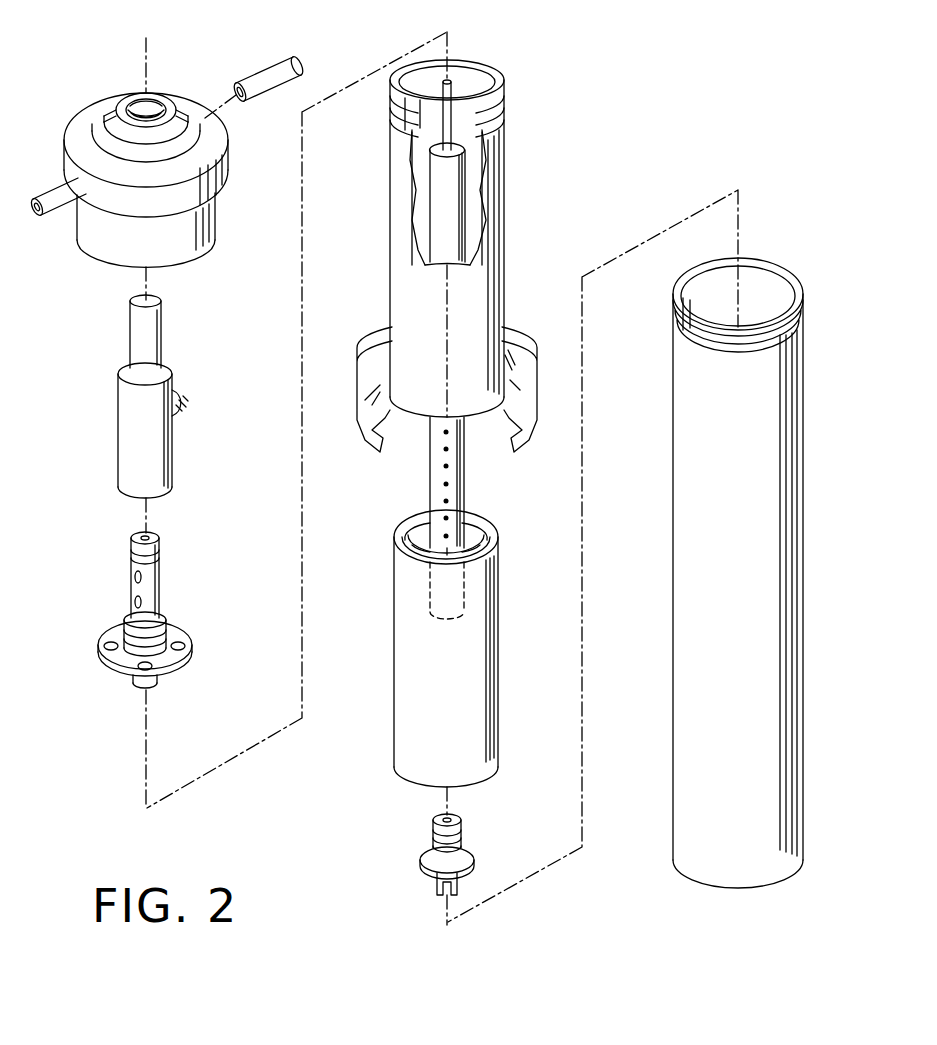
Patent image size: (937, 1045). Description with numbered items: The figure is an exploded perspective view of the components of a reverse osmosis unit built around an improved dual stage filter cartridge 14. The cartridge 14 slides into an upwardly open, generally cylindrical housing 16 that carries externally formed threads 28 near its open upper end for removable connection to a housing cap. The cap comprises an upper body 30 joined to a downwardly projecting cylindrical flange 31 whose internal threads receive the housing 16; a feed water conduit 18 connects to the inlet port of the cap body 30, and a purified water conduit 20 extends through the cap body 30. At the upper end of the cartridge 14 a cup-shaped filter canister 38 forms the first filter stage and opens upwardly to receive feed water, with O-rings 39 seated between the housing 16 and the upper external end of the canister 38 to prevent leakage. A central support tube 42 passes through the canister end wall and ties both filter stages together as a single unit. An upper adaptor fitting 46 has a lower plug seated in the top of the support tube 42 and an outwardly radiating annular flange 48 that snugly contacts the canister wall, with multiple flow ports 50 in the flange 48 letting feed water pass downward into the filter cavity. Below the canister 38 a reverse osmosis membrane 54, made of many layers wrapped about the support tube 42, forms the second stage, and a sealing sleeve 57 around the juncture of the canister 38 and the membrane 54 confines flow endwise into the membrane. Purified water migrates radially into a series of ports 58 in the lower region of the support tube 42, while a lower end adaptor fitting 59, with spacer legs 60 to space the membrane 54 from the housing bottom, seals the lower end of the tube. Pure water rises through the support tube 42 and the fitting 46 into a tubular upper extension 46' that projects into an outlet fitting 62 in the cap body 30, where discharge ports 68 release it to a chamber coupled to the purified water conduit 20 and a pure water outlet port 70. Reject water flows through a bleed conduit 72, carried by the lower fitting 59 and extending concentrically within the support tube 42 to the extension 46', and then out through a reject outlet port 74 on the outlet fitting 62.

The filter cartridge 14 is at (542, 200).
The housing 16 is at (778, 454).
The feed water conduit 18 is at (43, 200).
The purified water conduit 20 is at (257, 78).
The externally formed threads 28 is at (803, 320).
The upper body 30 is at (216, 172).
The cylindrical flange 31 is at (100, 240).
The filter canister 38 is at (407, 280).
The O-rings 39 is at (506, 132).
The central support tube 42 is at (452, 247).
The upper adaptor fitting 46 is at (182, 636).
The tubular upper extension 46' is at (175, 575).
The annular flange 48 is at (178, 672).
The flow ports 50 is at (103, 645).
The reverse osmosis membrane 54 is at (482, 626).
The sealing sleeve 57 is at (518, 337).
The ports 58 is at (448, 504).
The lower end adaptor fitting 59 is at (462, 848).
The spacer legs 60 is at (433, 878).
The outlet fitting 62 is at (124, 427).
The discharge ports 68 is at (130, 602).
The pure water outlet port 70 is at (188, 413).
The bleed conduit 72 is at (455, 93).
The reject outlet port 74 is at (135, 332).